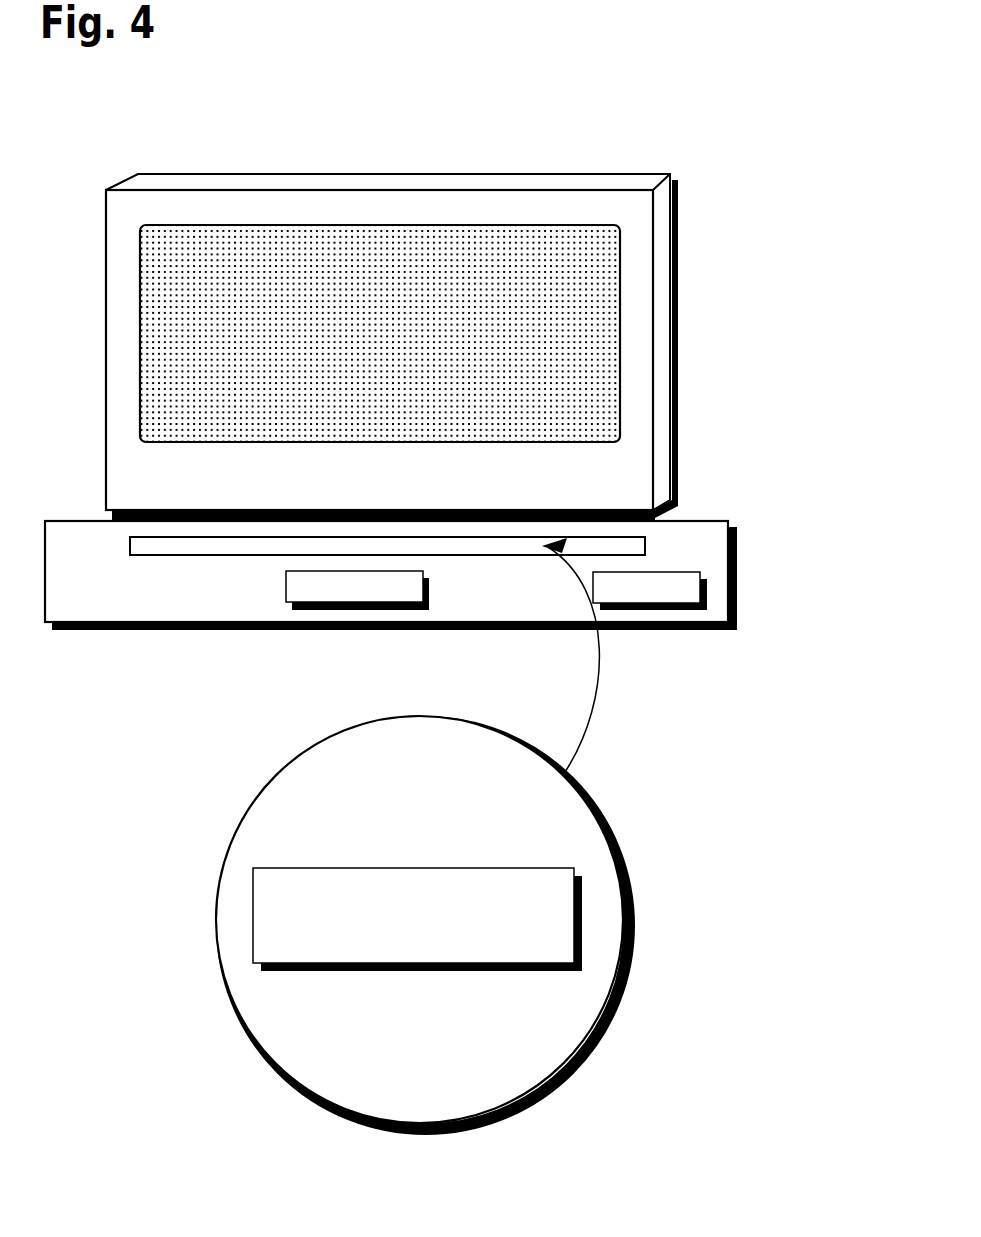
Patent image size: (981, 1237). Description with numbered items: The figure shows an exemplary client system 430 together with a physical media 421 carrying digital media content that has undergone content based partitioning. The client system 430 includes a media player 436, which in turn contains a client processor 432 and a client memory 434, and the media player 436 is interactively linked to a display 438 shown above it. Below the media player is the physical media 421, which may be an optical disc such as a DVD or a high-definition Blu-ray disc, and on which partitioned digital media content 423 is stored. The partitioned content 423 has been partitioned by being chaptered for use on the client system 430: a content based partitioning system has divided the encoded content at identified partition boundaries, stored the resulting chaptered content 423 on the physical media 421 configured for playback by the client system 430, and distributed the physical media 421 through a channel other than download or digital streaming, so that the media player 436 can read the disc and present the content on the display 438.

The client system 430 is at (786, 84).
The display 438 is at (474, 174).
The media player 436 is at (731, 572).
The client processor 432 is at (429, 589).
The client memory 434 is at (668, 572).
The physical media 421 is at (216, 917).
The partitioned digital media content 423 is at (327, 973).